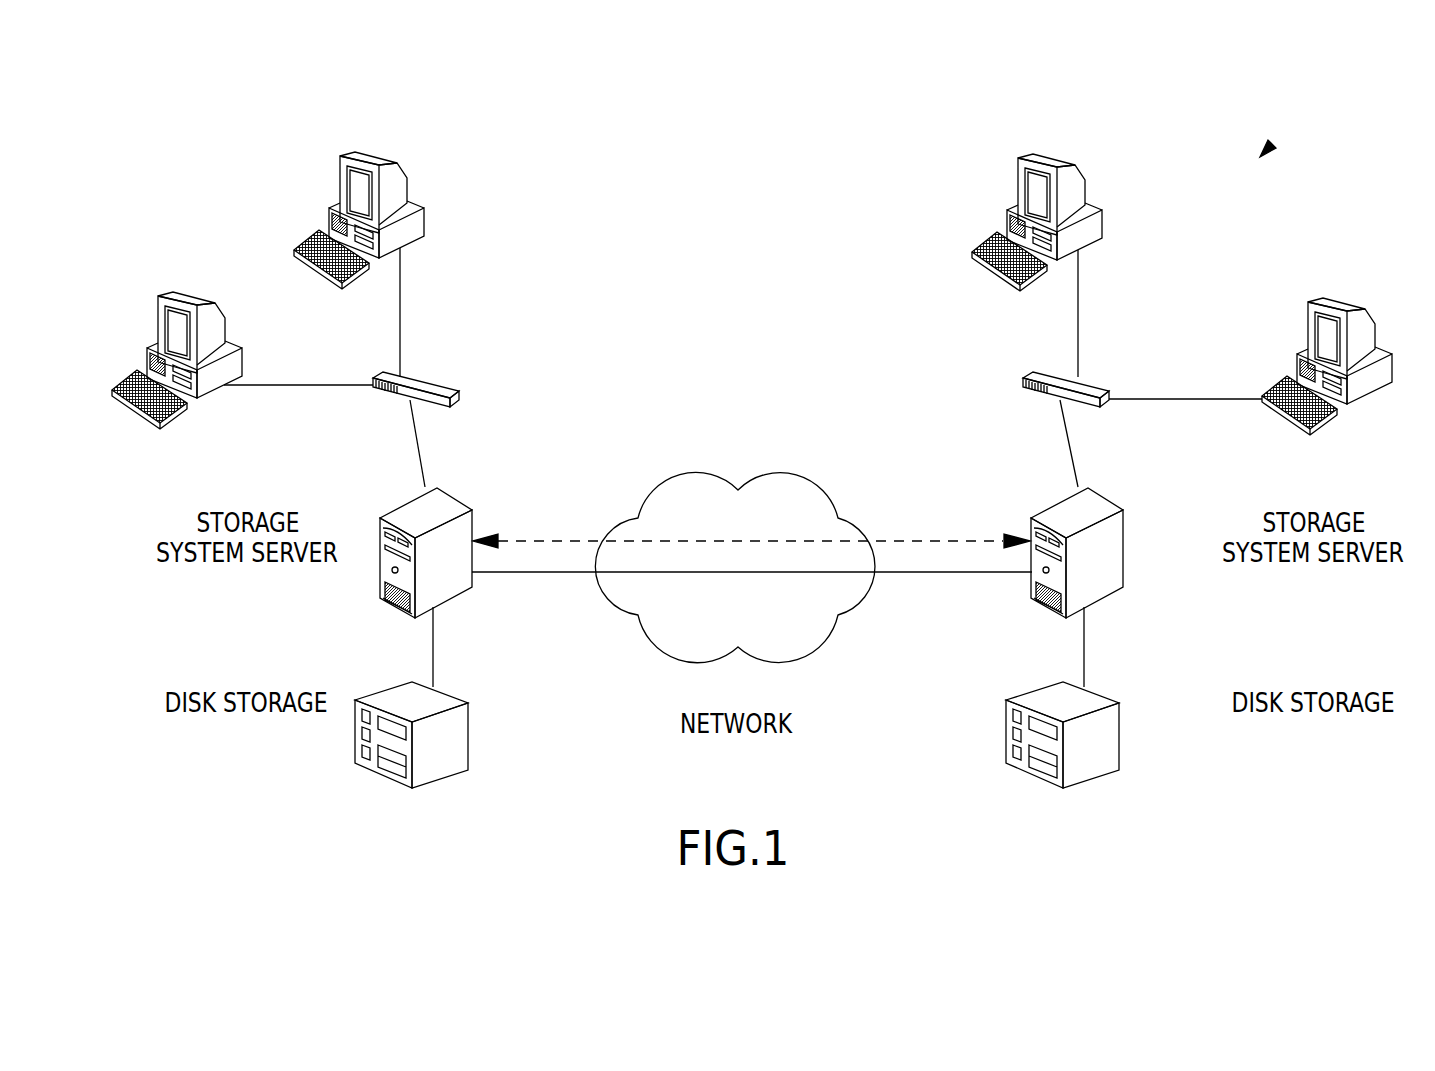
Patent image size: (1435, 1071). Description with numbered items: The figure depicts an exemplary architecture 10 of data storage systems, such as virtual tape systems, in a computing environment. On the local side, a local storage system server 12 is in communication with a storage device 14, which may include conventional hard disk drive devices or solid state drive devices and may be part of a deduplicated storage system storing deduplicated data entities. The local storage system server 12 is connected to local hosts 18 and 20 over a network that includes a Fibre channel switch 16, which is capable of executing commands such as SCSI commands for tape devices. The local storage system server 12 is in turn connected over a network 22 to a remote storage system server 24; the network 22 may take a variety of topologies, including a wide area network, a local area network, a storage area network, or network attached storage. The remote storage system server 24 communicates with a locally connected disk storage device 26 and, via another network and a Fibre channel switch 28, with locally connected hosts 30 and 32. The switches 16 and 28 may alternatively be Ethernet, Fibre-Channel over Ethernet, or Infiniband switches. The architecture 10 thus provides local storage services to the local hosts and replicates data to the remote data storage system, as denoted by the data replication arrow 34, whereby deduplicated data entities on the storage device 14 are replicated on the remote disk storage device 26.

The architecture 10 is at (1272, 144).
The local storage system server 12 is at (466, 502).
The storage device 14 is at (472, 738).
The Fibre channel switch 16 is at (430, 383).
The local host 18 is at (228, 342).
The local host 20 is at (410, 198).
The network 22 is at (815, 488).
The remote storage system server 24 is at (1123, 563).
The disk storage device 26 is at (1120, 738).
The Fibre channel switch 28 is at (1048, 375).
The host 30 is at (1090, 197).
The host 32 is at (1378, 345).
The data replication arrow 34 is at (942, 540).